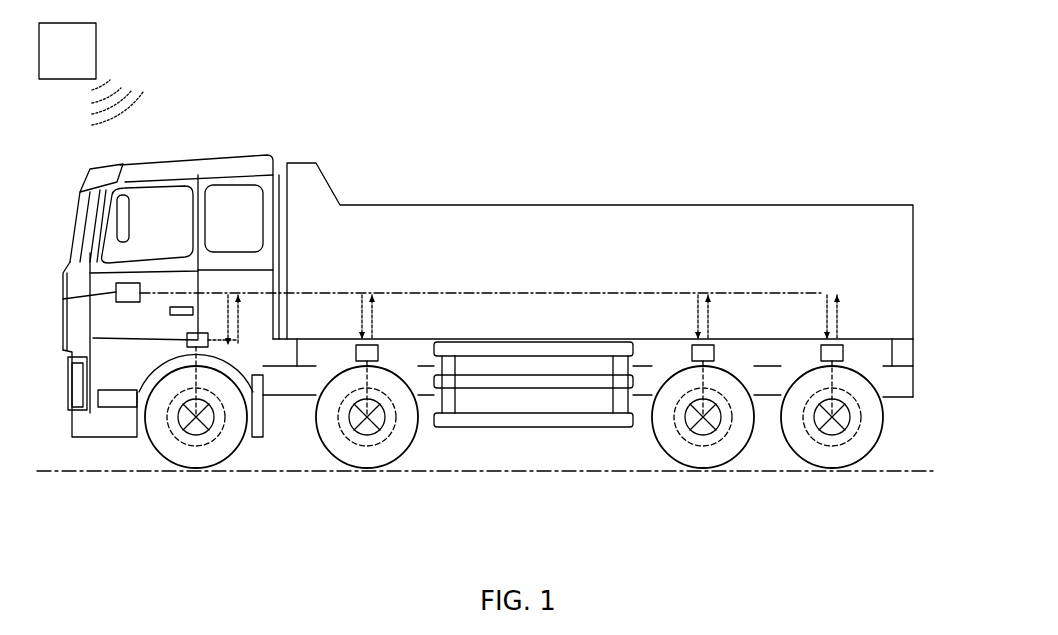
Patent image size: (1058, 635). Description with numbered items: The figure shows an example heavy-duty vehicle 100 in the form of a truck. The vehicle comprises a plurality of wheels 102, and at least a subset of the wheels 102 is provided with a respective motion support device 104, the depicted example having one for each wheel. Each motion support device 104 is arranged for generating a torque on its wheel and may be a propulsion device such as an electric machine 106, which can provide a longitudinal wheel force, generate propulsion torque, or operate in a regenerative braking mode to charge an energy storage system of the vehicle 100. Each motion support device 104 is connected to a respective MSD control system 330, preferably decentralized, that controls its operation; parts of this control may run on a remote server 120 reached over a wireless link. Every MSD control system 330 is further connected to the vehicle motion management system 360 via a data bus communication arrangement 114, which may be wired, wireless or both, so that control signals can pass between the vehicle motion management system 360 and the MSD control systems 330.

The heavy-duty vehicle 100 is at (517, 103).
The wheels 102 is at (188, 457).
The motion support device 104 is at (196, 417).
The electric machine 106 is at (169, 420).
The data bus communication arrangement 114 is at (573, 293).
The remote server 120 is at (97, 50).
The MSD control system 330 is at (187, 340).
The vehicle motion management system 360 is at (90, 293).